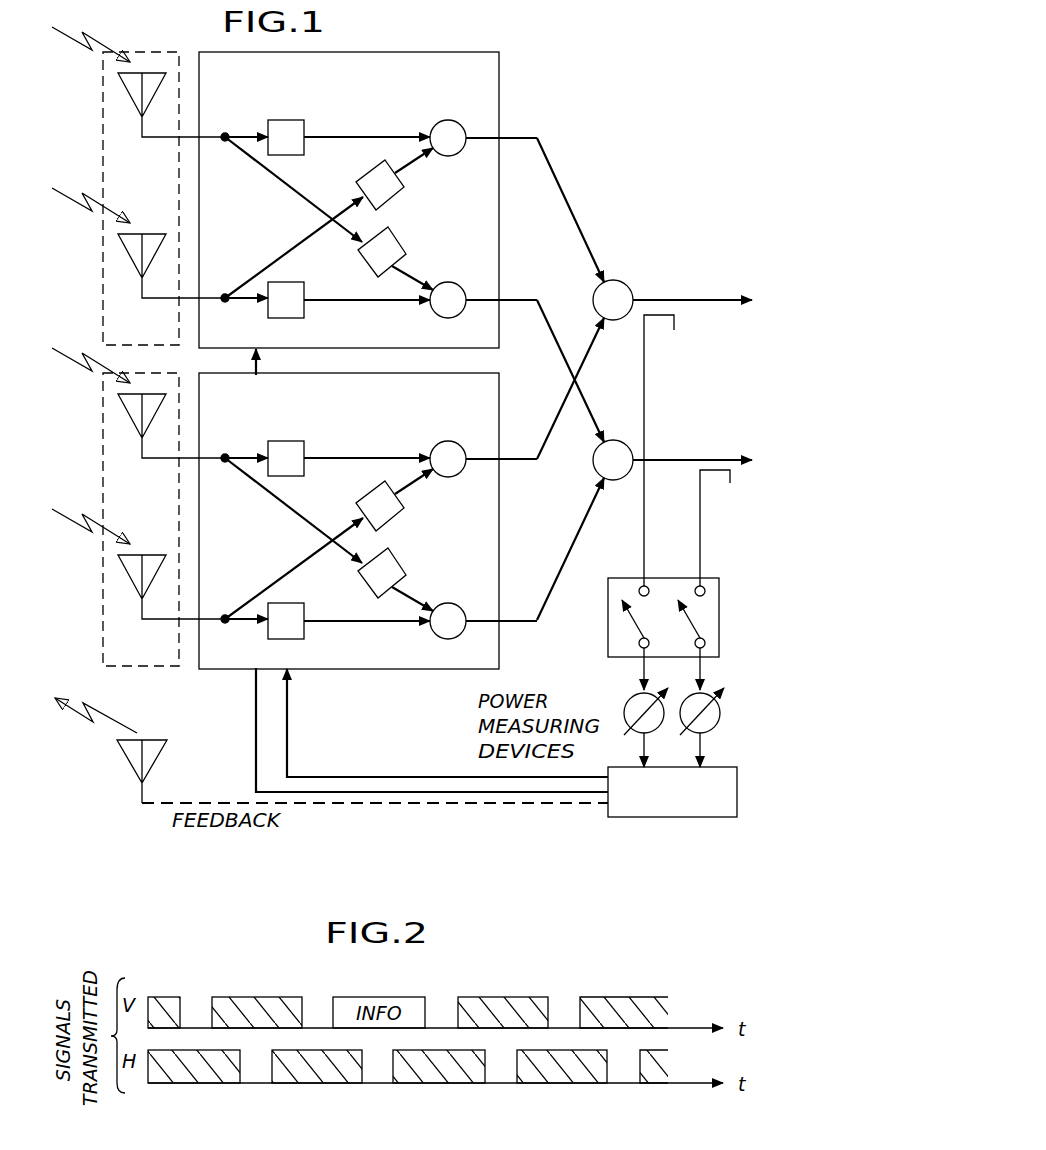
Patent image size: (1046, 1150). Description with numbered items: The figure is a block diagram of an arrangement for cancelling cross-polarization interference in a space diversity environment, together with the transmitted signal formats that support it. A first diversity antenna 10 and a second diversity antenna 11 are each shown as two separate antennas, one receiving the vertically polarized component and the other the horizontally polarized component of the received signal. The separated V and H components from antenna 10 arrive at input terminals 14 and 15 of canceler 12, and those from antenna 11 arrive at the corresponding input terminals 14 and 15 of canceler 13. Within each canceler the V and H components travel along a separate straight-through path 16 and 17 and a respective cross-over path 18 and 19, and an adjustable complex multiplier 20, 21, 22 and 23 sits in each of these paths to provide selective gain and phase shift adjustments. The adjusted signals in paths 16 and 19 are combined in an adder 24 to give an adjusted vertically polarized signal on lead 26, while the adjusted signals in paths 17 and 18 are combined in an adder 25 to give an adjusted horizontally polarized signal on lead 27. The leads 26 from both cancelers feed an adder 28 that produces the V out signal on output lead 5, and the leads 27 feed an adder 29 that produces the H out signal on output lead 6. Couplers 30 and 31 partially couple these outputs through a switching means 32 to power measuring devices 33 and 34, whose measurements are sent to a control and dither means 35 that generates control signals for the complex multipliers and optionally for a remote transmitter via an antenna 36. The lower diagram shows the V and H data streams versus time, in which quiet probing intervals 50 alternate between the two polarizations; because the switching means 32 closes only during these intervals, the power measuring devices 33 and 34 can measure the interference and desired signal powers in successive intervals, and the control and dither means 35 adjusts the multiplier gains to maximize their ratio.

In FIG. 1, the V out output lead 5 is at (695, 298).
In FIG. 1, the H out output lead 6 is at (680, 458).
In FIG. 1, the first diversity antenna 10 is at (102, 167).
In FIG. 1, the second diversity antenna 11 is at (138, 507).
In FIG. 1, the canceler 12 is at (436, 86).
In FIG. 1, the canceler 13 is at (436, 407).
In FIG. 1, the input terminal 14 is at (223, 133).
In FIG. 1, the input terminal 15 is at (223, 295).
In FIG. 1, the straight-through path 16 is at (258, 133).
In FIG. 1, the straight-through path 17 is at (245, 302).
In FIG. 1, the cross-over path 18 is at (303, 193).
In FIG. 1, the cross-over path 19 is at (316, 232).
In FIG. 1, the adjustable complex multiplier 20 is at (302, 124).
In FIG. 1, the adjustable complex multiplier 21 is at (298, 318).
In FIG. 1, the adjustable complex multiplier 22 is at (394, 232).
In FIG. 1, the adjustable complex multiplier 23 is at (405, 199).
In FIG. 1, the adder 24 is at (444, 120).
In FIG. 1, the adder 25 is at (444, 282).
In FIG. 1, the lead 26 is at (508, 136).
In FIG. 1, the lead 27 is at (506, 298).
In FIG. 1, the adder 28 is at (618, 279).
In FIG. 1, the adder 29 is at (618, 439).
In FIG. 1, the coupler 30 is at (662, 320).
In FIG. 1, the coupler 31 is at (712, 478).
In FIG. 1, the switching means 32 is at (608, 582).
In FIG. 1, the power measuring device 33 is at (624, 714).
In FIG. 1, the power measuring device 34 is at (711, 733).
In FIG. 1, the control and dither means 35 is at (643, 818).
In FIG. 1, the antenna 36 is at (156, 762).
In FIG. 2, the quiet probing interval 50 is at (322, 1028).